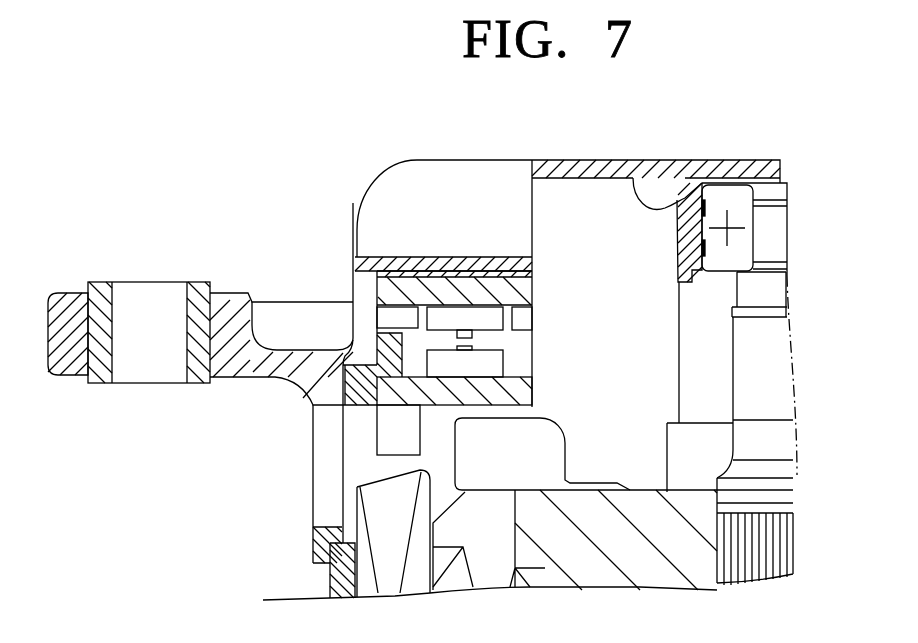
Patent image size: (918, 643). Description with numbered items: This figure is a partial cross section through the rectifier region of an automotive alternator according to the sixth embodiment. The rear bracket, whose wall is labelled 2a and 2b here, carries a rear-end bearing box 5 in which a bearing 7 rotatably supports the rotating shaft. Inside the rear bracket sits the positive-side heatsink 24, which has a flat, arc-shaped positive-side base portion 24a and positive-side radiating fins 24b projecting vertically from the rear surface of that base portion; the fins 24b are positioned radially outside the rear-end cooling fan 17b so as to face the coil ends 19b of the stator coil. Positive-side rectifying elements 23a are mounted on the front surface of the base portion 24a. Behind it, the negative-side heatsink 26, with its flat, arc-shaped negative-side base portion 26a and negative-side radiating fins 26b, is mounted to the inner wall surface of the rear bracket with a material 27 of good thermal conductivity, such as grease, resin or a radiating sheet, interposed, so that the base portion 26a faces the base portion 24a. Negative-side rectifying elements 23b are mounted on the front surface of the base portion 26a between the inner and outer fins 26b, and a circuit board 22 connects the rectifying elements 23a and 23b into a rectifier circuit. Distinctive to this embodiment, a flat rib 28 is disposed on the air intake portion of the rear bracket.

The housing upper portion 2a is at (533, 208).
The housing lower portion 2b is at (325, 453).
The rear-end bearing box 5 is at (672, 190).
The bearing 7 is at (726, 189).
The rear-end cooling fan 17b is at (543, 452).
The coil ends 19b is at (373, 502).
The circuit board 22 is at (308, 395).
The positive-side rectifying elements 23a is at (510, 358).
The negative-side rectifying elements 23b is at (493, 318).
The positive-side heatsink 24 is at (627, 352).
The positive-side base portion 24a is at (520, 383).
The positive-side radiating fins 24b is at (540, 420).
The negative-side heatsink 26 is at (268, 212).
The negative-side base portion 26a is at (383, 258).
The negative-side radiating fins 26b is at (352, 287).
The material that has good thermal conductivity 27 is at (463, 267).
The flat rib 28 is at (400, 203).